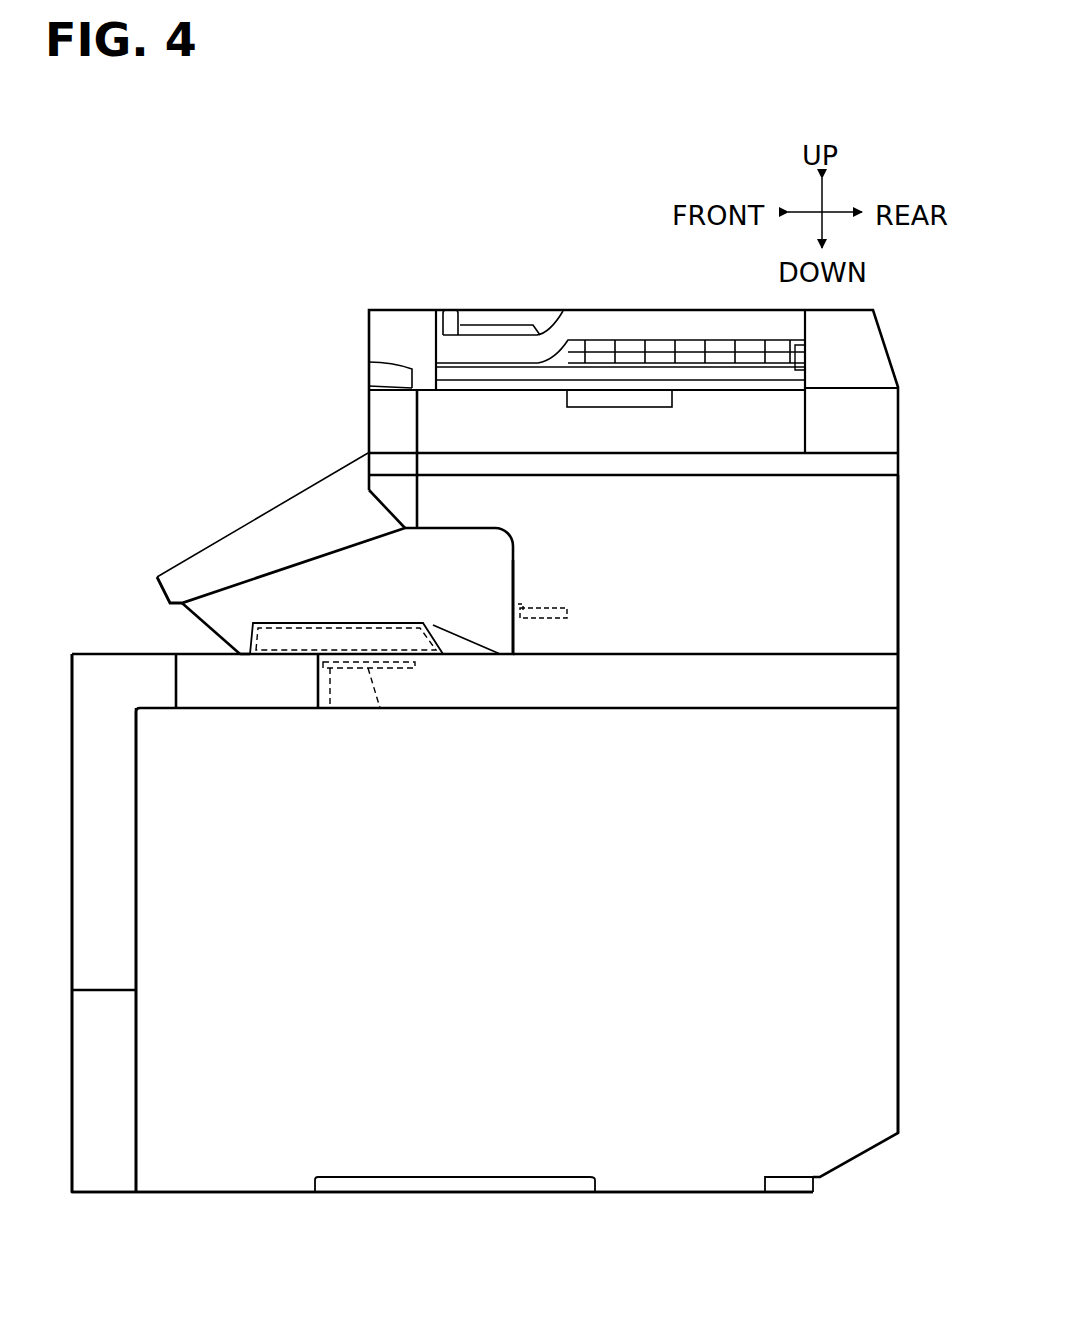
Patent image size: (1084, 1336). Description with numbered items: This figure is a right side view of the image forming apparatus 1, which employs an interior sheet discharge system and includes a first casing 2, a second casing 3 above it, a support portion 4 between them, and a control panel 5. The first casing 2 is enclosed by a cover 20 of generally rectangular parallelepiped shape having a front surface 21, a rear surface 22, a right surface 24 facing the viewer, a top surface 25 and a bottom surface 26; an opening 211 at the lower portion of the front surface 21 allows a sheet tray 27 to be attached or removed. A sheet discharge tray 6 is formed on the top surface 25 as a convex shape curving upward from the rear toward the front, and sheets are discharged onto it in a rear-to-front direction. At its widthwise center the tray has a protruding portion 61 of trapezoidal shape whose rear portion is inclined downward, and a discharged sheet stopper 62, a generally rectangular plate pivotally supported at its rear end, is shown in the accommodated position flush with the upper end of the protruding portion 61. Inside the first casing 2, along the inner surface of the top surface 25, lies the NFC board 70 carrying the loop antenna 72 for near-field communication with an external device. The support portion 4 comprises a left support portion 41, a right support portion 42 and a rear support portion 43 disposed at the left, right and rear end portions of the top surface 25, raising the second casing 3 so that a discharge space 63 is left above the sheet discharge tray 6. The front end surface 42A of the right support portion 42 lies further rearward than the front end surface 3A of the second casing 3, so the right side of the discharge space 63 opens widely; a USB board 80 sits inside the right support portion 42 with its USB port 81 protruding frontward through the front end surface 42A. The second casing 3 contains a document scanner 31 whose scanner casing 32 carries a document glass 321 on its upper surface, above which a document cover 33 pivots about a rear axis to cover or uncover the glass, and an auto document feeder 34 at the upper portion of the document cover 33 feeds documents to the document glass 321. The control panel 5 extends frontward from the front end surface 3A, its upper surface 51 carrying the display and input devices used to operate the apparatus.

The image forming apparatus 1 is at (122, 246).
The first casing 2 is at (104, 638).
The second casing 3 is at (352, 297).
The front end surface 3A is at (367, 484).
The support portion 4 is at (506, 553).
The control panel 5 is at (240, 497).
The sheet discharge tray 6 is at (459, 650).
The cover 20 is at (613, 1197).
The front surface 21 is at (65, 847).
The rear surface 22 is at (900, 932).
The right surface 24 is at (523, 946).
The top surface 25 is at (122, 653).
The bottom surface 26 is at (640, 1195).
The sheet tray 27 is at (98, 1183).
The document scanner 31 is at (360, 352).
The scanner casing 32 is at (396, 486).
The document cover 33 is at (378, 403).
The auto document feeder 34 is at (641, 310).
The left support portion 41 is at (185, 612).
The right support portion 42 is at (718, 607).
The front end surface 42A is at (513, 577).
The rear support portion 43 is at (900, 590).
The upper surface 51 is at (222, 537).
The protruding portion 61 is at (280, 643).
The discharged sheet stopper 62 is at (333, 625).
The discharge space 63 is at (420, 607).
The NFC board 70 is at (331, 668).
The loop antenna 72 is at (368, 668).
The USB board 80 is at (575, 592).
The USB port 81 is at (525, 606).
The opening 211 is at (136, 1176).
The document glass 321 is at (397, 452).